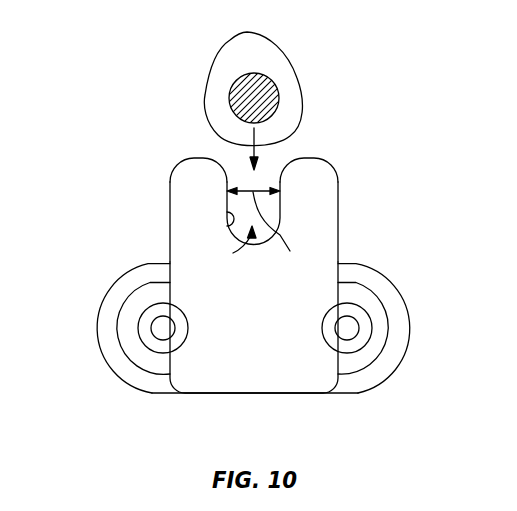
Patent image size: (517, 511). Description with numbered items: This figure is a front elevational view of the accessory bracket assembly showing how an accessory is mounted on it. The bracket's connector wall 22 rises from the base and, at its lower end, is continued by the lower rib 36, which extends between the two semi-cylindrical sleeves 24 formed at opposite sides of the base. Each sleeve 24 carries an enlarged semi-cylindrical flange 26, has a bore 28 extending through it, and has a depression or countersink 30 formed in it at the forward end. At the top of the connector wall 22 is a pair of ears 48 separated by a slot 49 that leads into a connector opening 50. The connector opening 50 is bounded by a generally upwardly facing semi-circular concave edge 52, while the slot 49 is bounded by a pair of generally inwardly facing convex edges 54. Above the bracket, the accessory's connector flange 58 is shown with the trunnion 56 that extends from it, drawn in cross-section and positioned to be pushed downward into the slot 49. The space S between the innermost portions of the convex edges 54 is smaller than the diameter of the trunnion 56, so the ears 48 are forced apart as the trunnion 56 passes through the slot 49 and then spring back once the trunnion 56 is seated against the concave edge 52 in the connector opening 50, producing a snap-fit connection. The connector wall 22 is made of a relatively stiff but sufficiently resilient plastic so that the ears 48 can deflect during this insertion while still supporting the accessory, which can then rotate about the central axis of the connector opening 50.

The connector wall 22 is at (177, 237).
The semi-cylindrical sleeve 24 is at (150, 283).
The semi-cylindrical flange 26 is at (104, 330).
The bore 28 is at (160, 328).
The countersink 30 is at (147, 340).
The lower rib 36 is at (282, 393).
The ears 48 is at (176, 170).
The slot 49 is at (266, 176).
The connector opening 50 is at (251, 233).
The concave edge 52 is at (228, 230).
The convex edges 54 is at (223, 161).
The trunnion 56 is at (275, 90).
The connector flange 58 is at (260, 47).
The space S is at (275, 233).